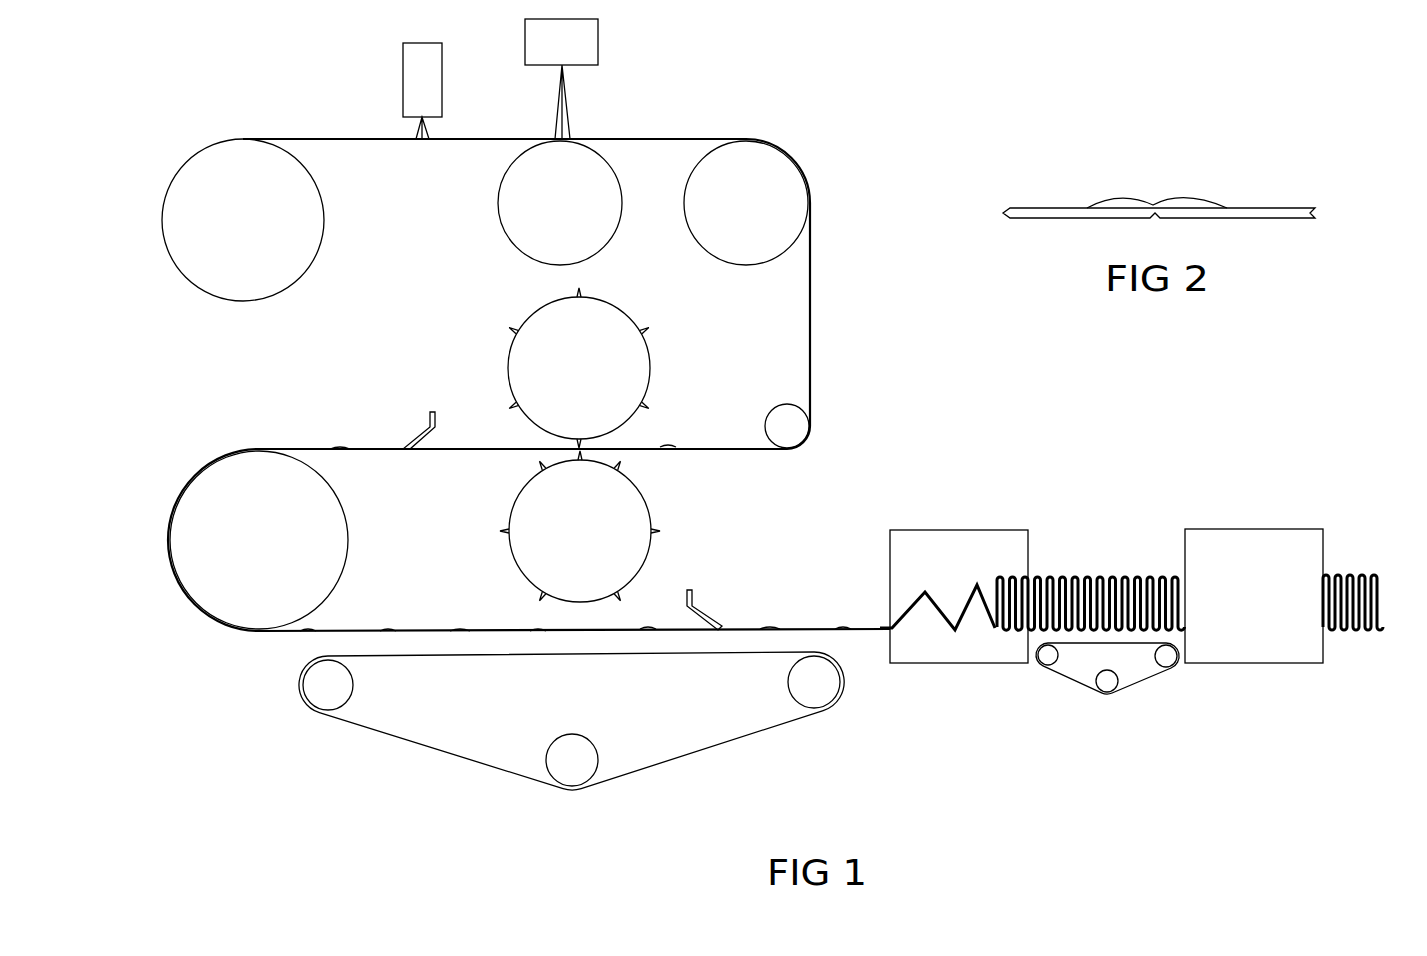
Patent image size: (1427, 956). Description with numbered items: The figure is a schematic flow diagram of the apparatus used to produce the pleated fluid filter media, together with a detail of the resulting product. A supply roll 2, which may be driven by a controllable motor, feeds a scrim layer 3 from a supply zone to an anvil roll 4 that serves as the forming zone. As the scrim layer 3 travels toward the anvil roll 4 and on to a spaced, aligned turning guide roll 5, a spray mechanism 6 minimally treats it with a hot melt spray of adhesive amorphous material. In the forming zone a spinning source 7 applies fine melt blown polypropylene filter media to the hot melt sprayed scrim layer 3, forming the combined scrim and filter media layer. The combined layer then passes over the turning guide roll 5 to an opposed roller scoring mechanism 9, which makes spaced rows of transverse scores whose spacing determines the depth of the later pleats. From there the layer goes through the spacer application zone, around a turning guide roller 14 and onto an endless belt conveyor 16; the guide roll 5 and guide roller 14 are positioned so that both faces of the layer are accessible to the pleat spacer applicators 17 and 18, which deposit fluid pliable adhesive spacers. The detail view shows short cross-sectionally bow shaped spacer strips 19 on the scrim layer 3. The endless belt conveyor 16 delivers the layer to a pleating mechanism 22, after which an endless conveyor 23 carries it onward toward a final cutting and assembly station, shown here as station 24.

In FIG. 1, the supply roll 2 is at (243, 220).
In FIG. 1, the scrim layer 3 is at (293, 138).
In FIG. 2, the scrim layer 3 is at (1270, 208).
In FIG. 1, the anvil roll 4 is at (574, 218).
In FIG. 1, the turning guide roll 5 is at (759, 218).
In FIG. 1, the spray mechanism 6 is at (435, 68).
In FIG. 1, the spinning source 7 is at (592, 33).
In FIG. 1, the scoring mechanism 9 is at (660, 364).
In FIG. 1, the turning guide roller 14 is at (312, 525).
In FIG. 1, the endless belt conveyor 16 is at (393, 730).
In FIG. 1, the pleat spacer applicator 17 is at (431, 411).
In FIG. 1, the pleat spacer applicator 18 is at (692, 588).
In FIG. 1, the spacer strips 19 is at (348, 445).
In FIG. 2, the spacer strips 19 is at (1195, 198).
In FIG. 1, the pleating mechanism 22 is at (962, 553).
In FIG. 1, the endless conveyor 23 is at (1078, 672).
In FIG. 1, the processing station 24 is at (1230, 553).